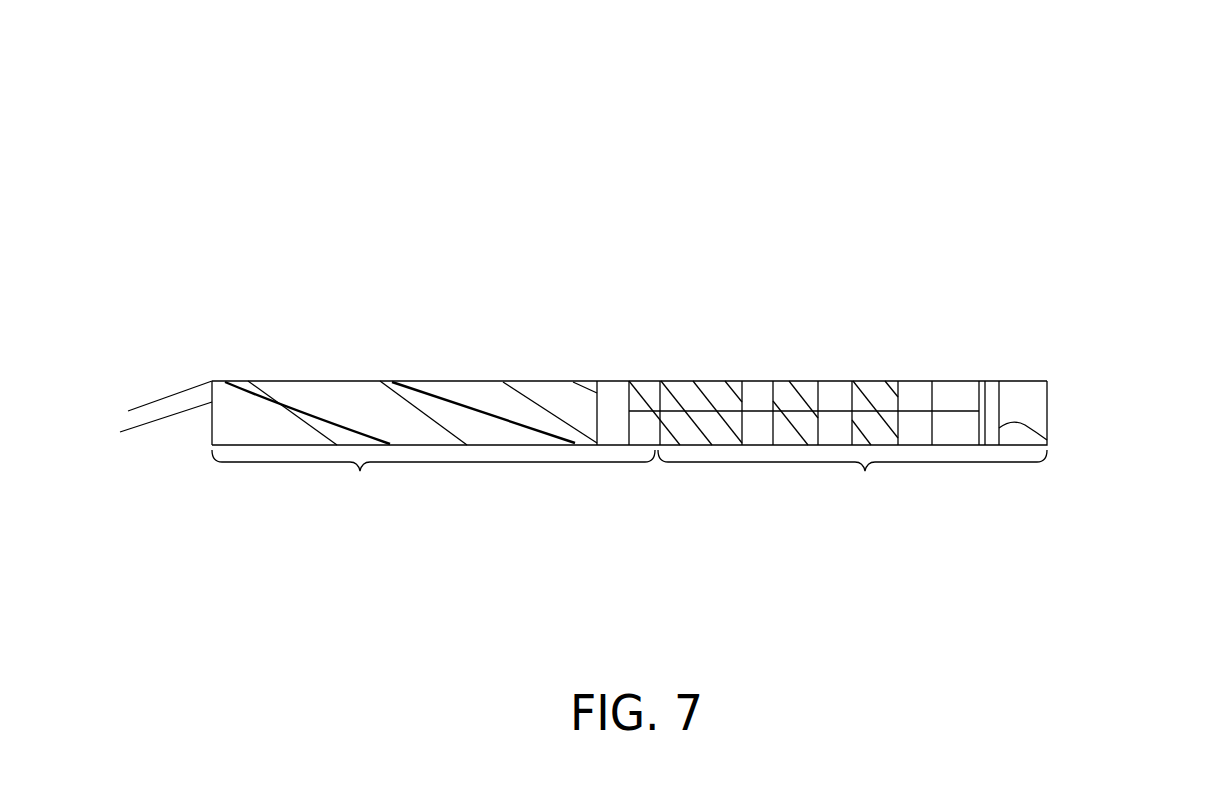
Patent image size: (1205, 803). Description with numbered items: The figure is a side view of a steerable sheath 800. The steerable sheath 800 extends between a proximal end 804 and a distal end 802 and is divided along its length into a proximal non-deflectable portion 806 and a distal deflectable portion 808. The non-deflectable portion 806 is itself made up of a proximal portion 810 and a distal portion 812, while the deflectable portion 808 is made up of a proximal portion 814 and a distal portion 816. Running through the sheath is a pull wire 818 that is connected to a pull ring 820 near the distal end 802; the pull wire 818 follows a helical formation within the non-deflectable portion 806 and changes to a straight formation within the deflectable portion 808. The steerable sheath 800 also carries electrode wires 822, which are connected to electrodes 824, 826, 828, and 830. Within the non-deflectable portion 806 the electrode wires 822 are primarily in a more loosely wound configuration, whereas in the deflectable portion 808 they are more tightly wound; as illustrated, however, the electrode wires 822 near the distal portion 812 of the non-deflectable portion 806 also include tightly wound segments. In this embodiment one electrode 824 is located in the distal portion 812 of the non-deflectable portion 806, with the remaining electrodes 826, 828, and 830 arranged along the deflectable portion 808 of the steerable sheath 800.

The steerable sheath 800 is at (1068, 165).
The distal end 802 is at (1072, 400).
The proximal end 804 is at (223, 375).
The proximal non-deflectable portion 806 is at (433, 481).
The distal deflectable portion 808 is at (838, 462).
The proximal portion 810 is at (255, 362).
The distal portion 812 is at (663, 368).
The proximal portion 814 is at (713, 357).
The distal portion 816 is at (1001, 368).
The pull wire 818 is at (153, 402).
The pull ring 820 is at (1047, 440).
The electrode wires 822 is at (145, 424).
The electrode 824 is at (597, 445).
The electrode 826 is at (760, 381).
The electrode 828 is at (838, 381).
The electrode 830 is at (913, 381).